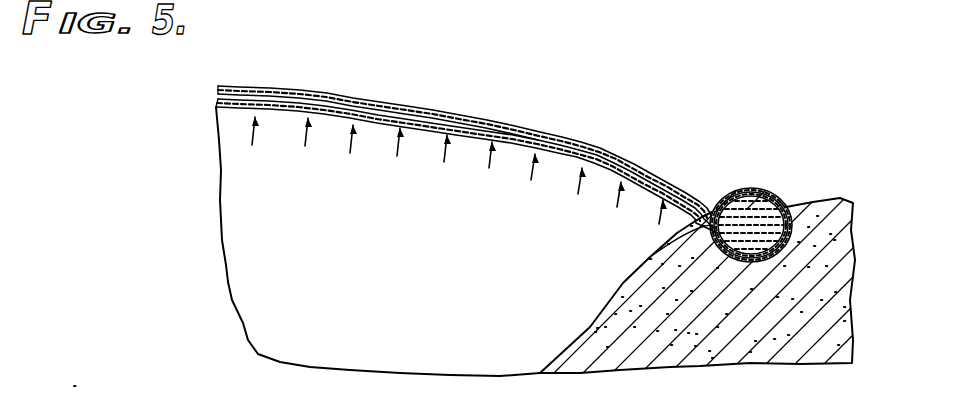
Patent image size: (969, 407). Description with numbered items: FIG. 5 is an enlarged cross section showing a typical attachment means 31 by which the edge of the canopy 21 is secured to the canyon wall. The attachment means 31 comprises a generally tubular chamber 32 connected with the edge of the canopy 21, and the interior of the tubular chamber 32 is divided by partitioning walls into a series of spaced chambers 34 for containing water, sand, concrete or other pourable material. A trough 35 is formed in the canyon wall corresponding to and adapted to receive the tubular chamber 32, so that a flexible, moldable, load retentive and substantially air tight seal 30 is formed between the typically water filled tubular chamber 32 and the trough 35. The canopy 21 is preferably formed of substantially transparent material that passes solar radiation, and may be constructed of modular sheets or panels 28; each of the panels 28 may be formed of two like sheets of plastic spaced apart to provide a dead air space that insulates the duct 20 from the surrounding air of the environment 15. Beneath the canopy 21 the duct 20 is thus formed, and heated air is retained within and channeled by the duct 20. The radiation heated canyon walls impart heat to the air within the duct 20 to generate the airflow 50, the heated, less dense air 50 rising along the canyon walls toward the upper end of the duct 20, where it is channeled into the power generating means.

The environment 15 is at (672, 114).
The duct 20 is at (384, 276).
The canopy 21 is at (466, 108).
The panels 28 is at (293, 89).
The seal 30 is at (770, 263).
The attachment means 31 is at (784, 168).
The tubular chamber 32 is at (745, 188).
The spaced chambers 34 is at (727, 220).
The trough 35 is at (782, 206).
The airflow 50 is at (489, 168).